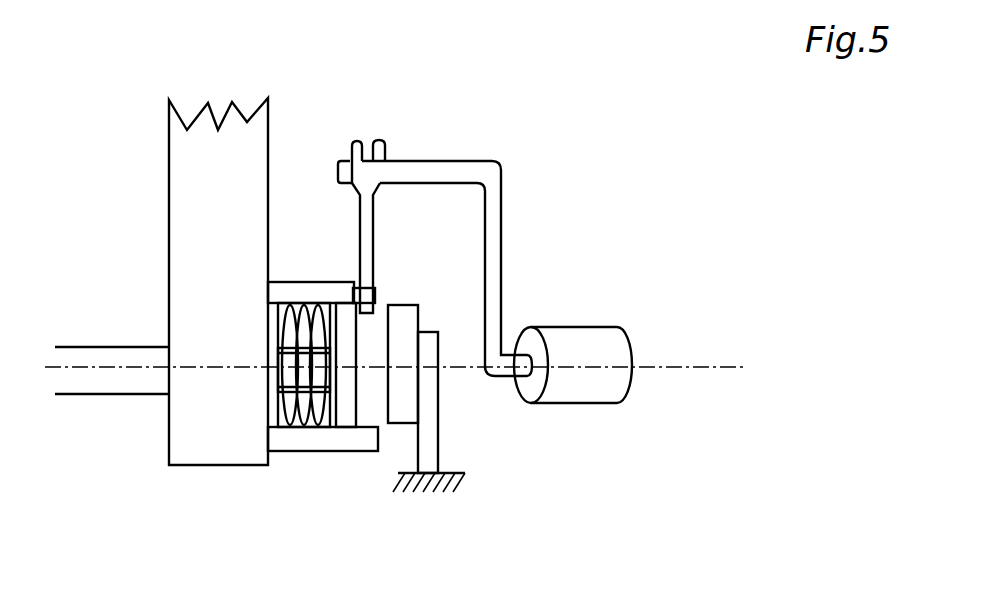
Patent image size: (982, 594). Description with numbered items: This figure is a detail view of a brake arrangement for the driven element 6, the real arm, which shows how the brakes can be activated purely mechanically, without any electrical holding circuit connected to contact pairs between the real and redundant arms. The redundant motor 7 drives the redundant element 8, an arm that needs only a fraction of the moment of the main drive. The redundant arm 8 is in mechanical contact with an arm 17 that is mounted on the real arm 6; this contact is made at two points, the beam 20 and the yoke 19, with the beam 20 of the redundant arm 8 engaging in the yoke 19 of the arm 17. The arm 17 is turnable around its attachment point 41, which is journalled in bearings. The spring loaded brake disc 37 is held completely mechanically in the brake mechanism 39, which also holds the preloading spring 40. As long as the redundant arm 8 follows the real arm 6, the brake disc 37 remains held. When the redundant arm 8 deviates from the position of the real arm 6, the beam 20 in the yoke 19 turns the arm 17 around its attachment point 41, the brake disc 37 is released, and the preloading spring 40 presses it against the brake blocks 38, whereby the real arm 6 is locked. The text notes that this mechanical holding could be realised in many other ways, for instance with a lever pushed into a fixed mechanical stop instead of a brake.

The driven element 6 is at (190, 205).
The redundant motor 7 is at (590, 327).
The redundant element 8 is at (496, 226).
The arm 17 is at (360, 232).
The yoke 19 is at (381, 141).
The beam 20 is at (386, 170).
The brake disc 37 is at (350, 414).
The brake blocks 38 is at (403, 388).
The brake mechanism 39 is at (293, 442).
The preloading spring 40 is at (328, 428).
The attachment point 41 is at (376, 296).